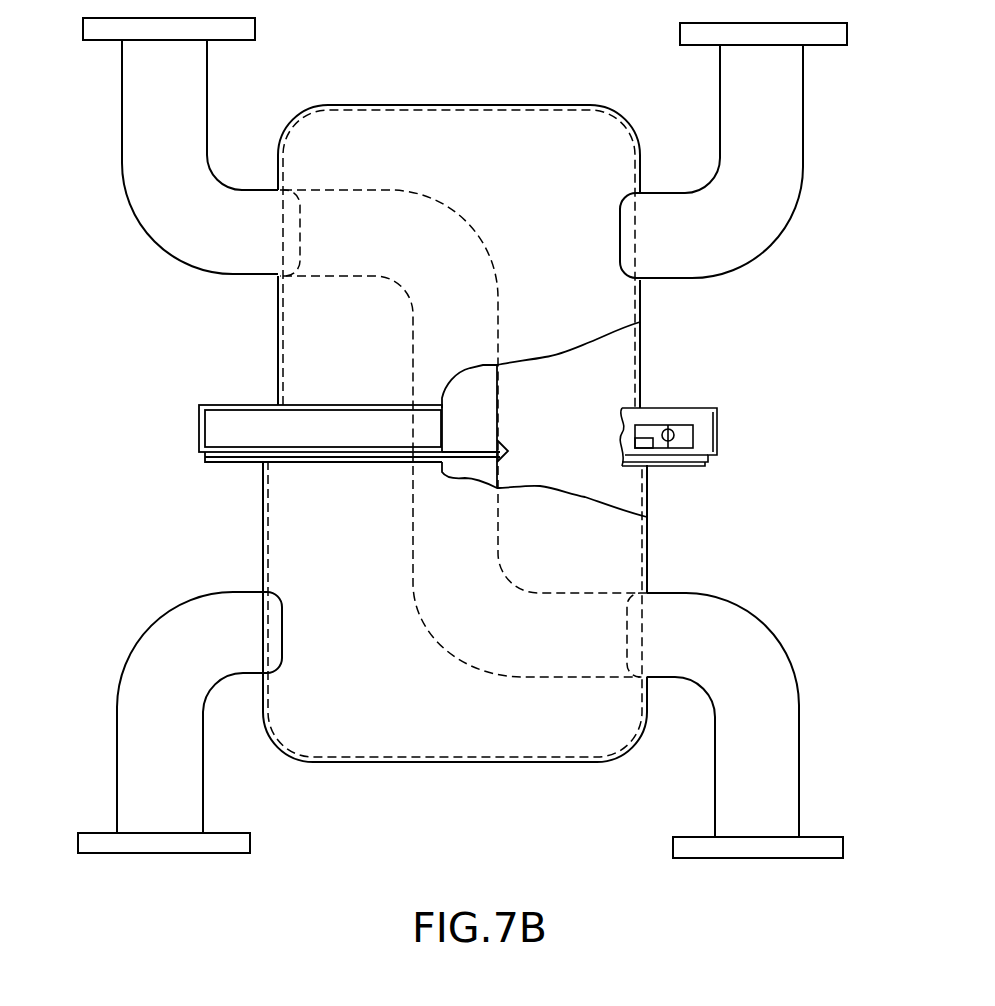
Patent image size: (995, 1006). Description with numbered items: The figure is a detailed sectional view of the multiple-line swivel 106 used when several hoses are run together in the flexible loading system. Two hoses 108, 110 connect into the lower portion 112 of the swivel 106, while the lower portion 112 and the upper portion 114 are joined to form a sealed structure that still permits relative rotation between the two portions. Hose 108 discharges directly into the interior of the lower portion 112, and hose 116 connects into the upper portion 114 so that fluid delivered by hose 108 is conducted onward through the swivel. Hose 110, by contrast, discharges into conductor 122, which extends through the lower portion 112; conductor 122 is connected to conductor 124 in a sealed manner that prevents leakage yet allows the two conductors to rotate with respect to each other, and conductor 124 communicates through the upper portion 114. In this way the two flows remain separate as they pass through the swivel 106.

The swivel 106 is at (278, 359).
The hose 108 is at (117, 747).
The hose 110 is at (800, 777).
The lower portion 112 is at (263, 540).
The upper portion 114 is at (640, 302).
The hose 116 is at (800, 193).
The conductor 122 is at (416, 592).
The conductor 124 is at (413, 327).